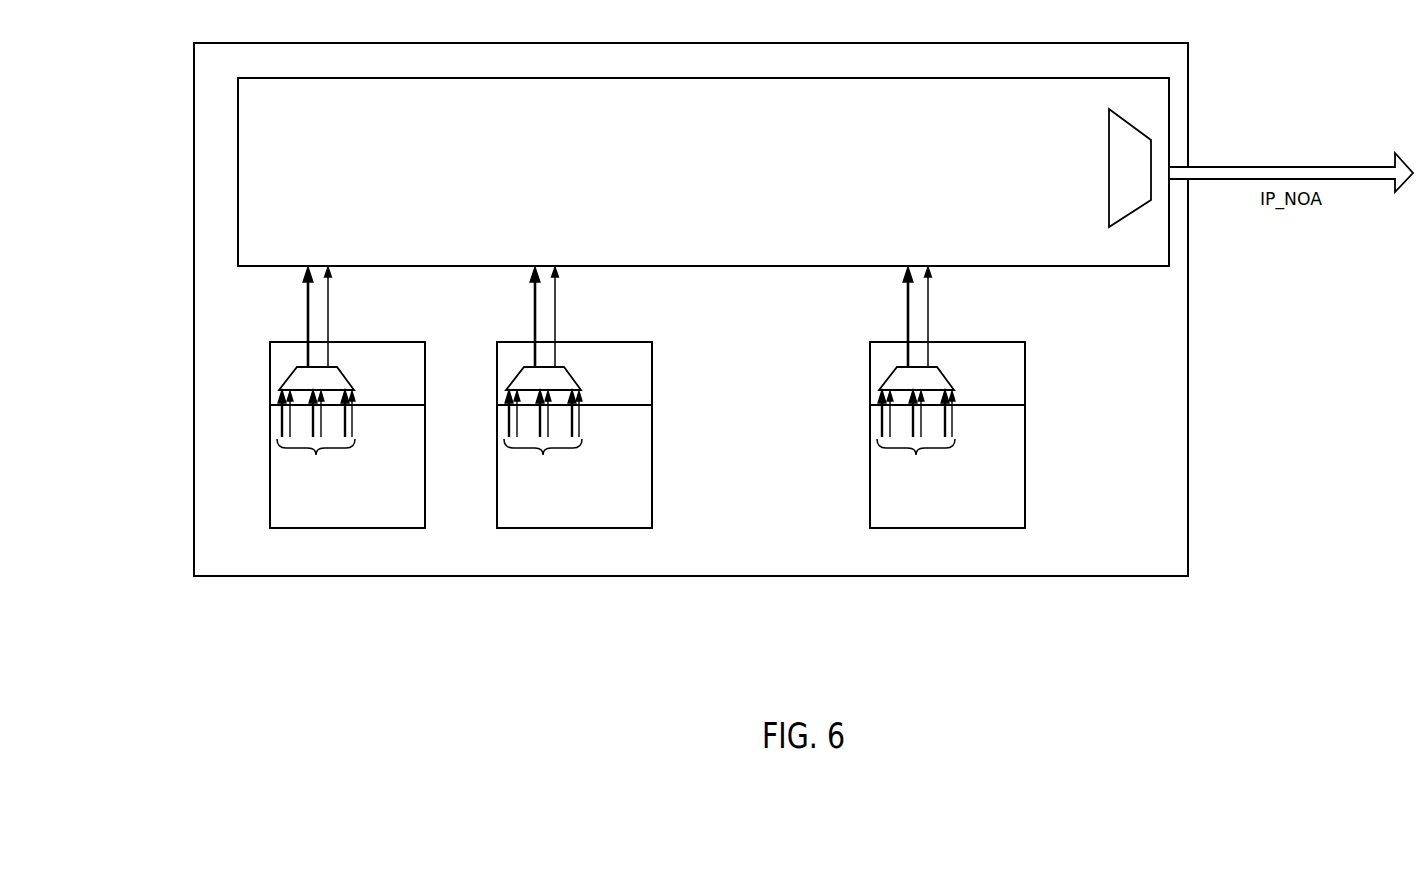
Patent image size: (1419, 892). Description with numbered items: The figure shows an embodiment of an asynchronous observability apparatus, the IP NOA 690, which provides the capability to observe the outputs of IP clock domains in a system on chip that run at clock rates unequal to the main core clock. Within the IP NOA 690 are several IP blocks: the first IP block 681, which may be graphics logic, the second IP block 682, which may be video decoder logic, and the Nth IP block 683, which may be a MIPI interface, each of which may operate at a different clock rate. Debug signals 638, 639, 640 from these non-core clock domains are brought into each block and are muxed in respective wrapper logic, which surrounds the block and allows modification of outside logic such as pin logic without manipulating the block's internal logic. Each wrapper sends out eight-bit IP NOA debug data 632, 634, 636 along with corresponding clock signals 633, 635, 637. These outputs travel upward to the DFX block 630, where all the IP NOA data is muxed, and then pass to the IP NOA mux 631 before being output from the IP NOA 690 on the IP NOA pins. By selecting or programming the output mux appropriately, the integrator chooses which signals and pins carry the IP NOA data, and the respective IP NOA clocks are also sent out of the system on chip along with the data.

The DFX block 630 is at (250, 233).
The IP NOA mux 631 is at (1113, 203).
The IP NOA debug data 632 is at (308, 307).
The clock signal 633 is at (328, 320).
The IP NOA debug data 634 is at (535, 307).
The clock signal 635 is at (555, 320).
The IP NOA debug data 636 is at (908, 307).
The clock signal 637 is at (928, 320).
The debug signals 638 is at (316, 434).
The debug signals 639 is at (543, 434).
The debug signals 640 is at (916, 434).
The IP block IP-1 681 is at (280, 508).
The IP block IP-2 682 is at (507, 508).
The IP block IP-N 683 is at (880, 508).
The IP NOA 690 is at (1188, 432).